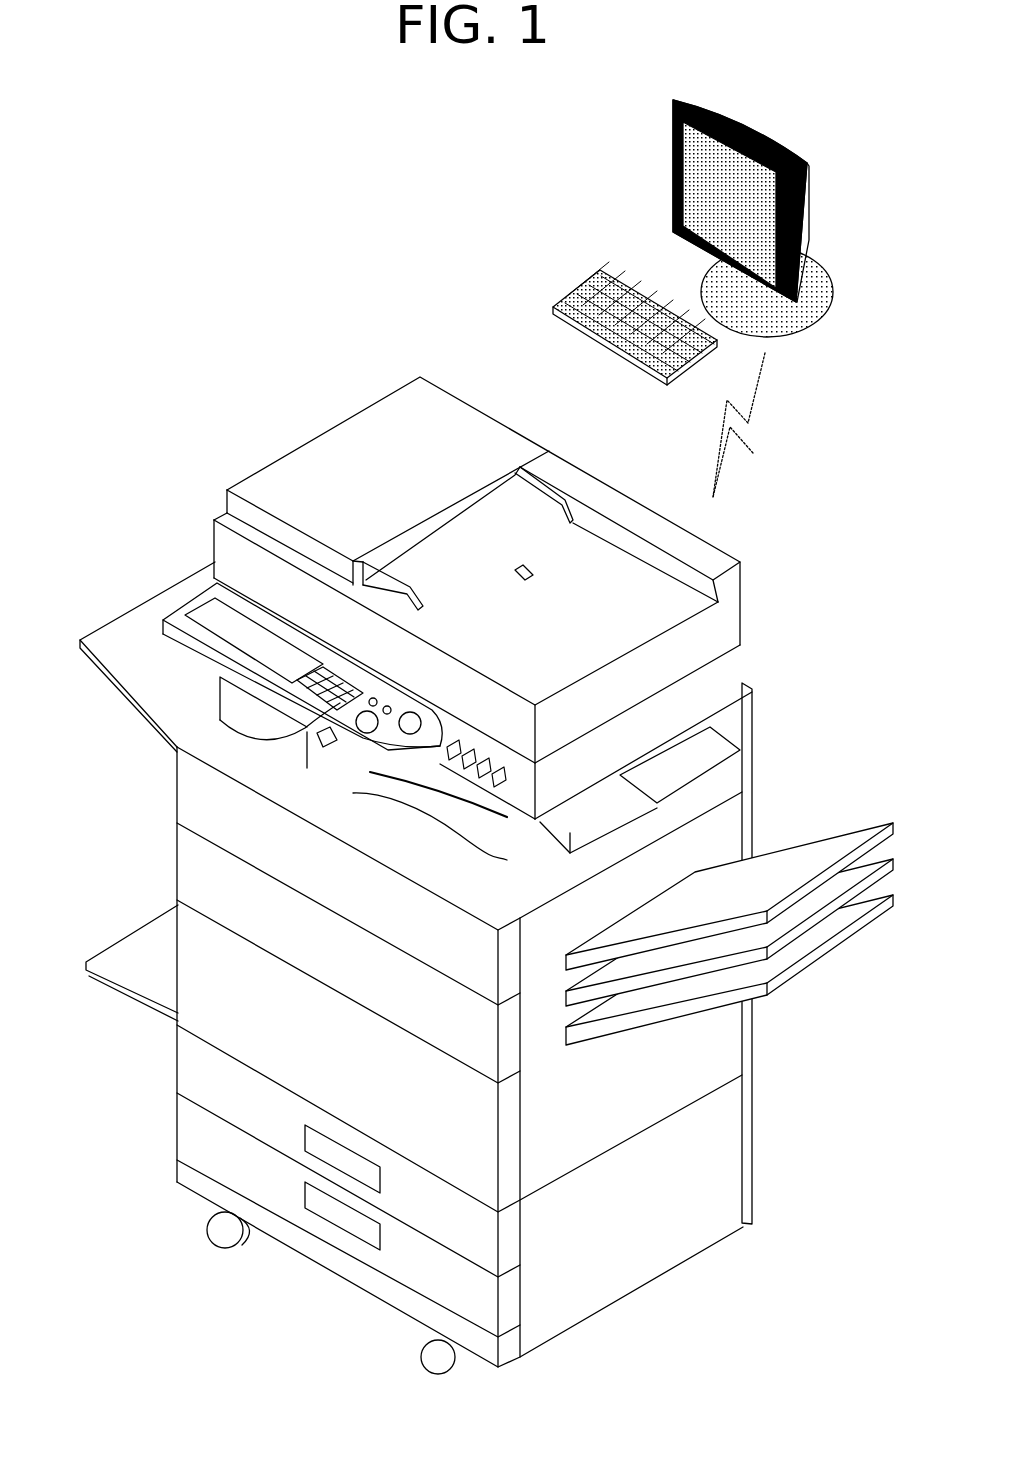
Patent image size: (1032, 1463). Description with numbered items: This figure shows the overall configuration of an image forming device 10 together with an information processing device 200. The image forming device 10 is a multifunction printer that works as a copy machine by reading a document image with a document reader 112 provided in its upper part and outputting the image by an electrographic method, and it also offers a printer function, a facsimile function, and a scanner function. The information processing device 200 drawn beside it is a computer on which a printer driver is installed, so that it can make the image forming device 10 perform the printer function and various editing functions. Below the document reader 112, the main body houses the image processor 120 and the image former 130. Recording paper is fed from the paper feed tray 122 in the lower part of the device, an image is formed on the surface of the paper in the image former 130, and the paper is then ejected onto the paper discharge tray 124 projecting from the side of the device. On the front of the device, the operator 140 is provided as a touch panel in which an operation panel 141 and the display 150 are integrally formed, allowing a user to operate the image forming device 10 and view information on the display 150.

The image forming device 10 is at (244, 418).
The information processing device 200 is at (570, 237).
The document reader 112 is at (757, 640).
The display 150 is at (256, 637).
The operator 140 is at (222, 622).
The operation panel 141 is at (198, 742).
The image processor 120 is at (469, 1028).
The image former 130 is at (160, 858).
The paper feed tray 122 is at (160, 1130).
The paper discharge tray 124 is at (797, 818).